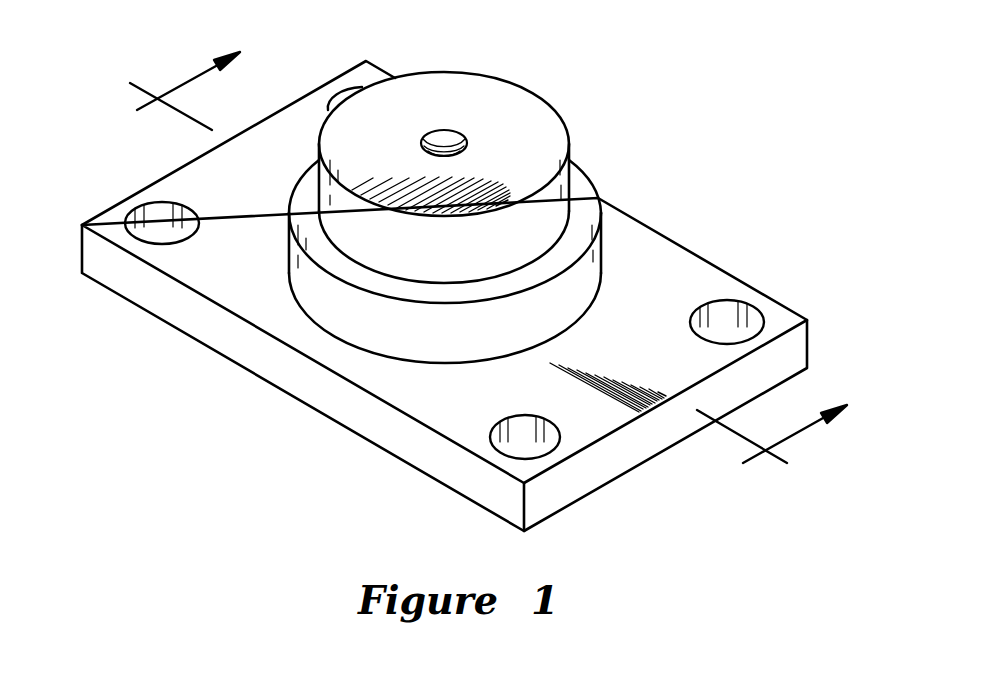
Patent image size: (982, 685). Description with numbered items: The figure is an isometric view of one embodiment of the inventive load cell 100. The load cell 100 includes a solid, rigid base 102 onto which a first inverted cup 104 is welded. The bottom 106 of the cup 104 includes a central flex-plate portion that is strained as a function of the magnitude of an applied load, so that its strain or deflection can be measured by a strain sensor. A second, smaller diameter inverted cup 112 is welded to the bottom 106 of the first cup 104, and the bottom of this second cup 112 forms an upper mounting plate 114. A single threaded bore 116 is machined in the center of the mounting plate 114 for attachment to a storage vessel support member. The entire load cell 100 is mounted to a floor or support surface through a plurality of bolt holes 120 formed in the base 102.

The load cell 100 is at (680, 174).
The base 102 is at (683, 268).
The first inverted cup 104 is at (360, 347).
The bottom of the first cup 106 is at (580, 207).
The second inverted cup 112 is at (318, 143).
The upper mounting plate 114 is at (510, 127).
The threaded bore 116 is at (445, 137).
The bolt holes 120 is at (173, 230).